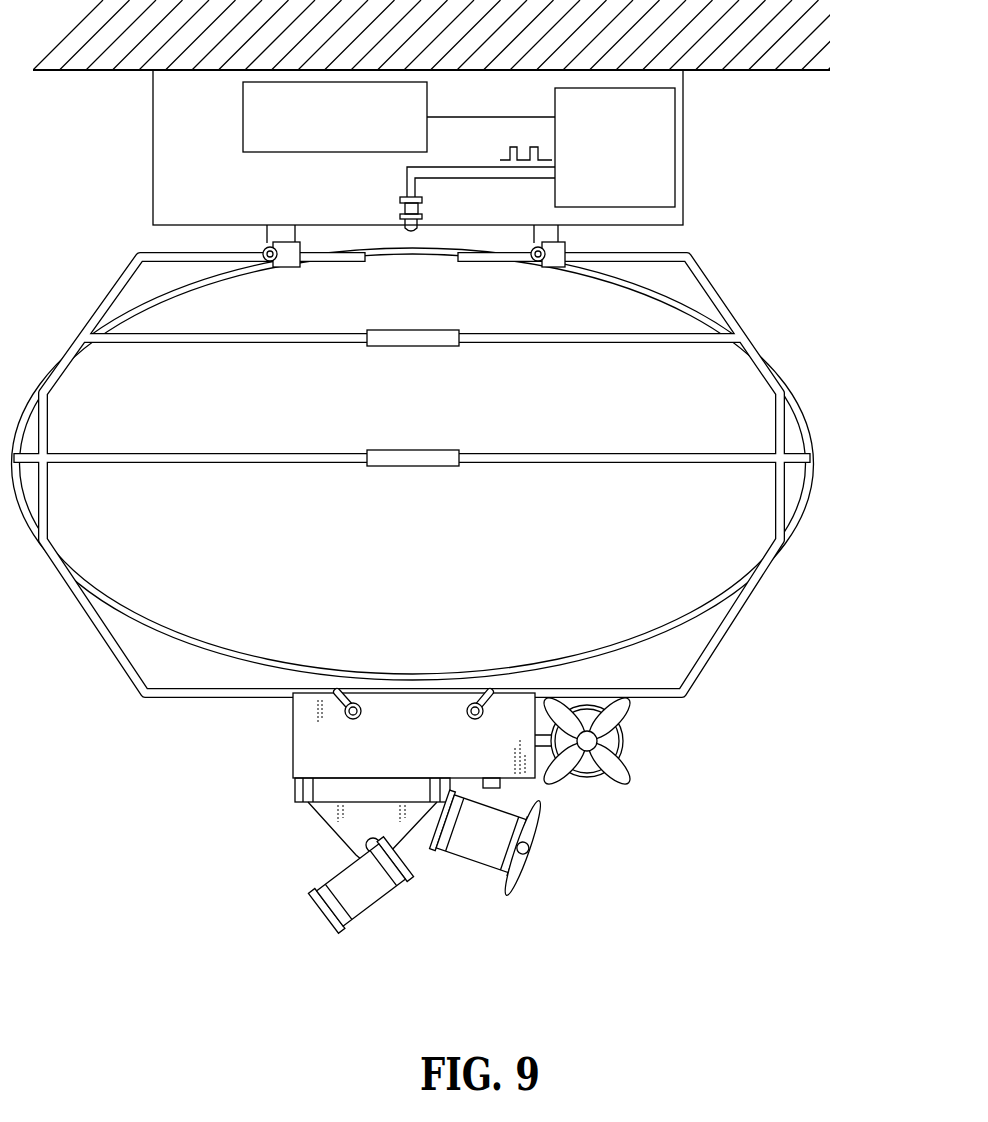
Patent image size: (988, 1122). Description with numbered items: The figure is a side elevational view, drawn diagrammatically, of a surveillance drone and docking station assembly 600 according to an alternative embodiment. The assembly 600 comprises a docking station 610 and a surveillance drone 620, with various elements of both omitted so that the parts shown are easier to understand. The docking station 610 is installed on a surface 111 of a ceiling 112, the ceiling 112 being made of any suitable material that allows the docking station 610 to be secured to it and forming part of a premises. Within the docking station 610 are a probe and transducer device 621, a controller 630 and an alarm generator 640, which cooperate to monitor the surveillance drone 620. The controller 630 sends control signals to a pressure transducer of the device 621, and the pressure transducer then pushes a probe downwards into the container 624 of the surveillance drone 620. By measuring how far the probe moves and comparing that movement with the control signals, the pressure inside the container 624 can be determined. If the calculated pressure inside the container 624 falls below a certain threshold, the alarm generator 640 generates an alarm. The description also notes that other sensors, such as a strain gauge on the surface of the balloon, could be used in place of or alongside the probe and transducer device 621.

The ceiling 112 is at (437, 44).
The surface 111 is at (118, 72).
The surveillance drone and docking station assembly 600 is at (876, 82).
The docking station 610 is at (213, 156).
The alarm generator 640 is at (355, 146).
The controller 630 is at (634, 179).
The probe and transducer device 621 is at (400, 208).
The surveillance drone 620 is at (817, 232).
The container 624 is at (440, 599).